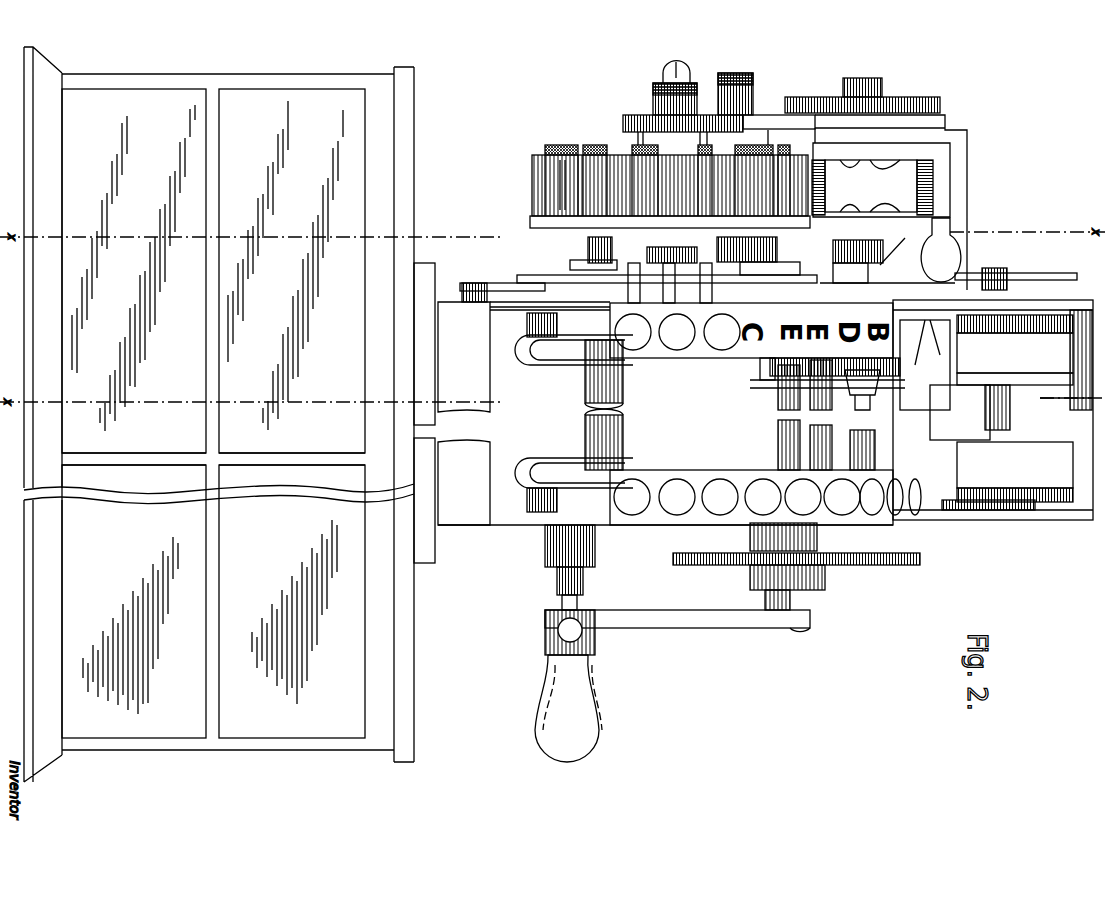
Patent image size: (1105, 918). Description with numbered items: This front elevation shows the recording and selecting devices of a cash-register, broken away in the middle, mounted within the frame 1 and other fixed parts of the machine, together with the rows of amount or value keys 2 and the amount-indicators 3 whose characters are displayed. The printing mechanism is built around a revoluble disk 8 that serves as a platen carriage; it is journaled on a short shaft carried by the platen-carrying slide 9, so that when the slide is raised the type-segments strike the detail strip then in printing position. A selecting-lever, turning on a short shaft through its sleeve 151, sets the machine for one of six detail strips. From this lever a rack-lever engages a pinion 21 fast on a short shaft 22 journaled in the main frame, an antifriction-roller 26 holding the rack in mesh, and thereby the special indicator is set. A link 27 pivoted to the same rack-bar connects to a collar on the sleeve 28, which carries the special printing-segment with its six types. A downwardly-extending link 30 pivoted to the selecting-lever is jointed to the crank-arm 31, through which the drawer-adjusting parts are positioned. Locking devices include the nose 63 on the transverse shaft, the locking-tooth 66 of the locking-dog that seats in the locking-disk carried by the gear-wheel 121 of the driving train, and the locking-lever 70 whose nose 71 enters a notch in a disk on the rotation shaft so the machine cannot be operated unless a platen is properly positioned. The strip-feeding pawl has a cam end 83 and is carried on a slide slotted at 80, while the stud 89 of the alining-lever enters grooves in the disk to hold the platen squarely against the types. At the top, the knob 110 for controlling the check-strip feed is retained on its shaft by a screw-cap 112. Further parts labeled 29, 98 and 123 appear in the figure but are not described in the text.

The frame 1 is at (665, 413).
The amount or value keys 2 is at (630, 520).
The amount-indicators 3 is at (1065, 500).
The revoluble disk 8 is at (614, 215).
The platen-carrying slide 9 is at (640, 130).
The pinion 21 is at (700, 625).
The short shaft 22 is at (960, 258).
The antifriction-roller 26 is at (775, 270).
The link 27 is at (903, 225).
The sleeve 28 is at (865, 220).
The gear 29 is at (790, 262).
The downwardly-extending link 30 is at (556, 277).
The crank-arm 31 is at (505, 283).
The nose 63 is at (830, 308).
The locking-tooth 66 is at (808, 308).
The locking-lever 70 is at (748, 392).
The nose 71 is at (690, 330).
The slot 80 is at (1030, 273).
The cam end 83 is at (606, 303).
The stud 89 is at (588, 240).
The P.O. key 98 is at (640, 325).
The knob 110 is at (632, 117).
The screw-cap 112 is at (668, 78).
The gear-wheel 121 is at (878, 566).
The cylinder 123 is at (822, 586).
The sleeve 151 is at (765, 369).